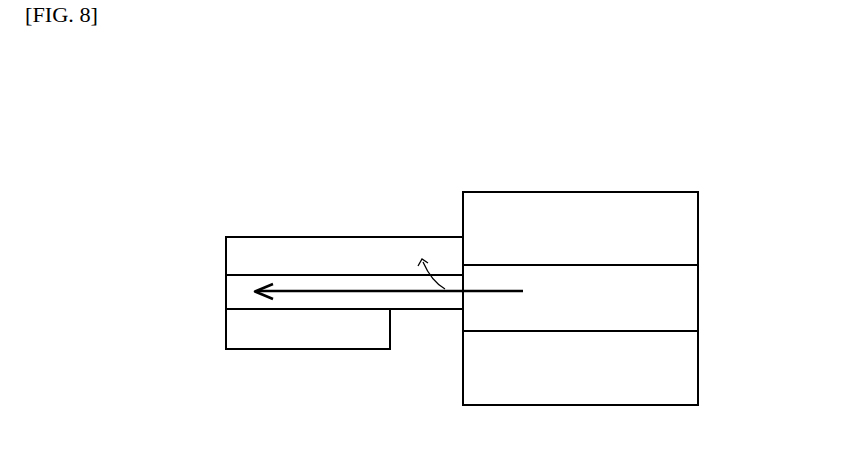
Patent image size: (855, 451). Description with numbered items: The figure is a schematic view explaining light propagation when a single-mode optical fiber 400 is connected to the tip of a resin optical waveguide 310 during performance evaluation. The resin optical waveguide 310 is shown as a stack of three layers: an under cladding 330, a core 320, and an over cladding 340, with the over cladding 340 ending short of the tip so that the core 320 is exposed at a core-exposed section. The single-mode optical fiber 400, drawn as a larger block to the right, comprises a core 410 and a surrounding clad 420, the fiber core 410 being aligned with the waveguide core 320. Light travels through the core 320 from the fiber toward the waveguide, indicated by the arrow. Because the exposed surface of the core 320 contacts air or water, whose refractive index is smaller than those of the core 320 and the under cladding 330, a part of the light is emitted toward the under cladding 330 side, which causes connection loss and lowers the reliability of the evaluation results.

The resin optical waveguide 310 is at (342, 221).
The core 320 is at (240, 294).
The under cladding 330 is at (240, 256).
The over cladding 340 is at (240, 333).
The single-mode optical fiber 400 is at (594, 170).
The core 410 is at (683, 300).
The clad 420 is at (683, 228).